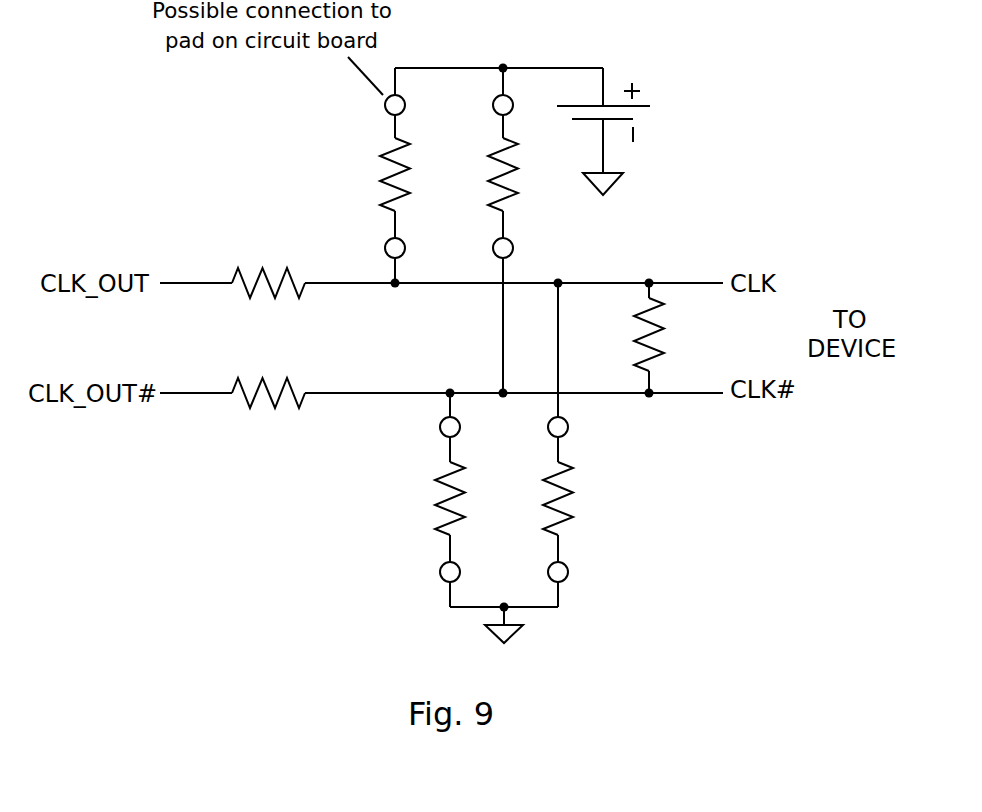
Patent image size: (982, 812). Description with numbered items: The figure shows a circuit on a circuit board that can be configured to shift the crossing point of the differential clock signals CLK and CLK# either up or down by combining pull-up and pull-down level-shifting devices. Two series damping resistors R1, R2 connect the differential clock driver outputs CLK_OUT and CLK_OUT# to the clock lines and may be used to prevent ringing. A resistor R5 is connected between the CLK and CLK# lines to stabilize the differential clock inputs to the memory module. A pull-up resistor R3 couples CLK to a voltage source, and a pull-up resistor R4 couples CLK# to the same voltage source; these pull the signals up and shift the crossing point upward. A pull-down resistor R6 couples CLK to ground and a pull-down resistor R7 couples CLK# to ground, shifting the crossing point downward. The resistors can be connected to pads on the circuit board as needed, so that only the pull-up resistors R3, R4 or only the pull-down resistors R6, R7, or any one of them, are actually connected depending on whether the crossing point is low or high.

The series damping resistor R1 is at (268, 297).
The series damping resistor R2 is at (268, 407).
The pull-up resistor R3 is at (380, 175).
The pull-up resistor R4 is at (488, 230).
The stabilizing resistor R5 is at (633, 338).
The pull-down resistor R6 is at (436, 500).
The pull-down resistor R7 is at (543, 445).